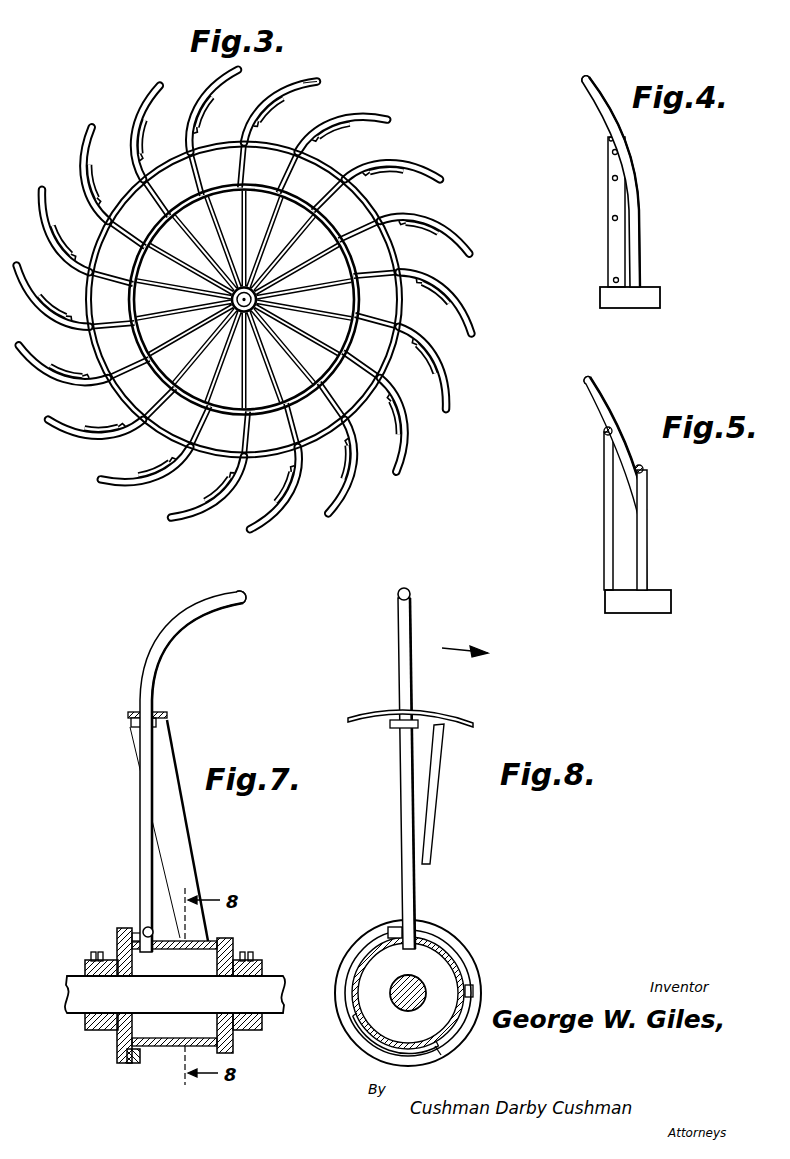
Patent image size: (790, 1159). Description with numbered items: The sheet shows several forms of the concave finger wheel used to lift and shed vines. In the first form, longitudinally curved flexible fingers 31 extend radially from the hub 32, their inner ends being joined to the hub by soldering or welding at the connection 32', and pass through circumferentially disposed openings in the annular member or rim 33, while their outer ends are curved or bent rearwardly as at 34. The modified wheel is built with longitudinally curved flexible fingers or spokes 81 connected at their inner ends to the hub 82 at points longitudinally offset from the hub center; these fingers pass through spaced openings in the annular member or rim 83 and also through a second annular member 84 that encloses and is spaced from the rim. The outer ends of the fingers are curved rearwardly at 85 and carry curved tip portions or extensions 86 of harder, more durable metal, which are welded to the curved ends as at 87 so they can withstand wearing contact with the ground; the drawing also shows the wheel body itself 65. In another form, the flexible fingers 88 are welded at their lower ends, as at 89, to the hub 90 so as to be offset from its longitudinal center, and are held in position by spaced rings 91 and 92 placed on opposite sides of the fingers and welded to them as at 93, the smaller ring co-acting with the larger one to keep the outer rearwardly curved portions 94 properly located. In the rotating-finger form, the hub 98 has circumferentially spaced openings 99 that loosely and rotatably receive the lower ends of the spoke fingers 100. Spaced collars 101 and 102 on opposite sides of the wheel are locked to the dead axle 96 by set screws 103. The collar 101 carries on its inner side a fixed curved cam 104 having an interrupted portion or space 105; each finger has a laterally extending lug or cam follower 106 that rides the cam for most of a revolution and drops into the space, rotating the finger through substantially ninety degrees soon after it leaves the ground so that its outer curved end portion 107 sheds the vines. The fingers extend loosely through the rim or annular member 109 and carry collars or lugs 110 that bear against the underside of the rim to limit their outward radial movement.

In FIG. 3, the inner rim 65 is at (199, 186).
In FIG. 3, the flexible fingers or spokes 81 is at (332, 194).
In FIG. 3, the hub 82 is at (286, 273).
In FIG. 3, the annular member or rim 83 is at (259, 183).
In FIG. 3, the annular member 84 is at (222, 140).
In FIG. 3, the outer curved ends 85 is at (258, 100).
In FIG. 3, the tip portions or extensions 86 is at (308, 83).
In FIG. 3, the weld 87 is at (266, 104).
In FIG. 4, the fingers 31 is at (631, 205).
In FIG. 4, the hub 32 is at (653, 301).
In FIG. 4, the connection 32' is at (657, 273).
In FIG. 4, the annular member or rim 33 is at (608, 138).
In FIG. 4, the rearwardly curved outer ends 34 is at (583, 82).
In FIG. 5, the flexible fingers or spokes 88 is at (640, 518).
In FIG. 5, the weld 89 is at (648, 588).
In FIG. 5, the hub 90 is at (663, 604).
In FIG. 5, the ring 91 is at (648, 478).
In FIG. 5, the ring 92 is at (604, 431).
In FIG. 5, the weld 93 is at (640, 467).
In FIG. 5, the outer rearwardly curved portions 94 is at (590, 380).
In FIG. 7, the dead axle 96 is at (272, 985).
In FIG. 7, the hub 98 is at (168, 1048).
In FIG. 7, the openings 99 is at (125, 941).
In FIG. 7, the spoke fingers 100 is at (146, 873).
In FIG. 8, the spoke fingers 100 is at (402, 797).
In FIG. 7, the collar 101 is at (100, 1028).
In FIG. 7, the collar 102 is at (250, 1030).
In FIG. 7, the set screws 103 is at (91, 956).
In FIG. 7, the fixed curved cam 104 is at (133, 1064).
In FIG. 8, the fixed curved cam 104 is at (460, 953).
In FIG. 8, the interrupted portion or space 105 is at (453, 1040).
In FIG. 7, the lug or cam follower 106 is at (145, 927).
In FIG. 8, the lug or cam follower 106 is at (394, 925).
In FIG. 7, the outer curved end portions 107 is at (215, 592).
In FIG. 8, the outer curved end portions 107 is at (411, 596).
In FIG. 7, the rim or annular member 109 is at (170, 725).
In FIG. 8, the rim or annular member 109 is at (465, 718).
In FIG. 7, the collars or lugs 110 is at (128, 722).
In FIG. 8, the collars or lugs 110 is at (395, 729).